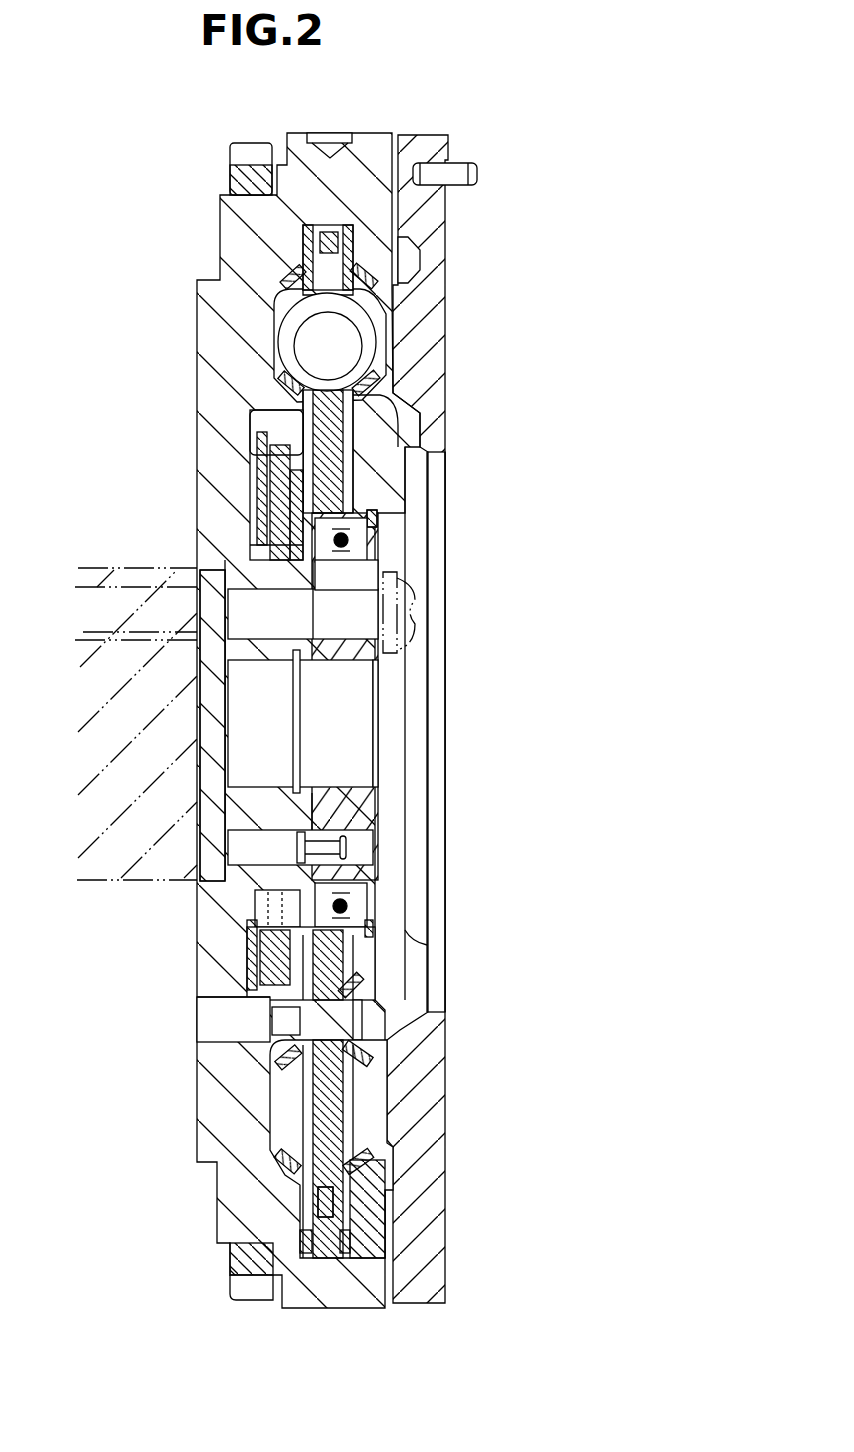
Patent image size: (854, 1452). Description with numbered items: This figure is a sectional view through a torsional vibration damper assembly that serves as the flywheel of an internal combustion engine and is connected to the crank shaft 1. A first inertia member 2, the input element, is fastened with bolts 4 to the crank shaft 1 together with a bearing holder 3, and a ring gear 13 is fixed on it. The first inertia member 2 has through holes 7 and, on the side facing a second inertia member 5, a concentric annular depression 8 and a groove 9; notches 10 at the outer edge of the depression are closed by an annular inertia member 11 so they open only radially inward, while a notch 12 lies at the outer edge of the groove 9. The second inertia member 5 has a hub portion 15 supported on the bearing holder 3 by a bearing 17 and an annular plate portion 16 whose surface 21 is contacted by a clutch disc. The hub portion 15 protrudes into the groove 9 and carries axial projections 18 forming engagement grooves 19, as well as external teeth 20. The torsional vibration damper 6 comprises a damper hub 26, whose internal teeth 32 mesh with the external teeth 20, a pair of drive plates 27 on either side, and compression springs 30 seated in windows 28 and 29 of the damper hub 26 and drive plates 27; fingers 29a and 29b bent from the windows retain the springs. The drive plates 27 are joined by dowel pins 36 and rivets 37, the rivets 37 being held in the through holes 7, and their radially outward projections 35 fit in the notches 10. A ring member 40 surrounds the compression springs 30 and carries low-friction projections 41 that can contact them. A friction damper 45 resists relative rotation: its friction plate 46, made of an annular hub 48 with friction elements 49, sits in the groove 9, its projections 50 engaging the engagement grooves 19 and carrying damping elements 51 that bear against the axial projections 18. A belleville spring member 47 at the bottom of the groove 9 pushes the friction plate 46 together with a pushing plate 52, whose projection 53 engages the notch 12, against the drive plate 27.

The crank shaft 1 is at (105, 772).
The first inertia member 2 is at (213, 1107).
The bearing holder 3 is at (372, 800).
The bolts 4 is at (418, 613).
The second inertia member 5 is at (440, 1273).
The torsional vibration damper 6 is at (248, 342).
The through holes 7 is at (194, 1040).
The annular depression 8 is at (227, 317).
The groove 9 is at (280, 480).
The notches 10 is at (330, 1258).
The annular inertia member 11 is at (380, 1187).
The notch 12 is at (250, 425).
The ring gear 13 is at (245, 178).
The hub portion 15 is at (340, 960).
The annular plate portion 16 is at (430, 1108).
The bearing 17 is at (358, 903).
The axial projections 18 is at (265, 905).
The engagement grooves 19 is at (350, 575).
The external teeth 20 is at (352, 540).
The surface 21 is at (445, 1135).
The damper hub 26 is at (330, 460).
The drive plates 27 is at (303, 240).
The windows 28 is at (280, 320).
The windows 29 is at (380, 330).
The axially outward fingers 29a is at (285, 386).
The axially outward fingers 29b is at (288, 282).
The compression springs 30 is at (365, 358).
The internal teeth 32 is at (360, 510).
The radially outward projections 35 is at (385, 1218).
The dowel pins 36 is at (250, 1245).
The rivets 37 is at (360, 1025).
The ring member 40 is at (332, 230).
The projections 41 is at (420, 258).
The friction damper 45 is at (170, 966).
The friction plate 46 is at (395, 440).
The spring member 47 is at (297, 495).
The annular hub 48 is at (270, 1020).
The friction elements 49 is at (255, 940).
The projections 50 is at (212, 570).
The damping elements 51 is at (310, 538).
The pushing plate 52 is at (258, 985).
The projection 53 is at (262, 470).